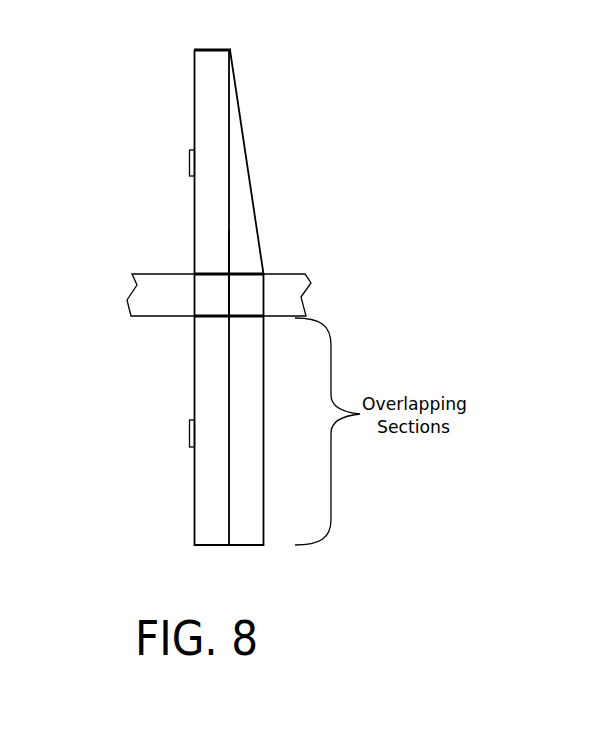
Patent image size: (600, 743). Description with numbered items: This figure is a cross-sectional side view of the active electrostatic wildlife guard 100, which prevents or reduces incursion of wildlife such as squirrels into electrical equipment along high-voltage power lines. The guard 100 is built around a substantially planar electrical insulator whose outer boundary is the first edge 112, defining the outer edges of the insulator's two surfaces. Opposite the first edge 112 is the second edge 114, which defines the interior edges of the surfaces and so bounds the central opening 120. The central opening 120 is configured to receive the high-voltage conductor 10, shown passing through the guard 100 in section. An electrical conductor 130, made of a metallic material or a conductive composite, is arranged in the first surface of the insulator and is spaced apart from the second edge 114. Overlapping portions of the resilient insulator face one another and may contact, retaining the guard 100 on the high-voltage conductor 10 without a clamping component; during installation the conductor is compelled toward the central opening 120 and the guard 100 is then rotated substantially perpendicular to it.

The active electrostatic wildlife guard 100 is at (332, 88).
The first edge 112 is at (213, 50).
The second edge 114 is at (222, 273).
The central opening 120 is at (213, 290).
The electrical conductor 130 is at (190, 150).
The high-voltage conductor 10 is at (294, 273).